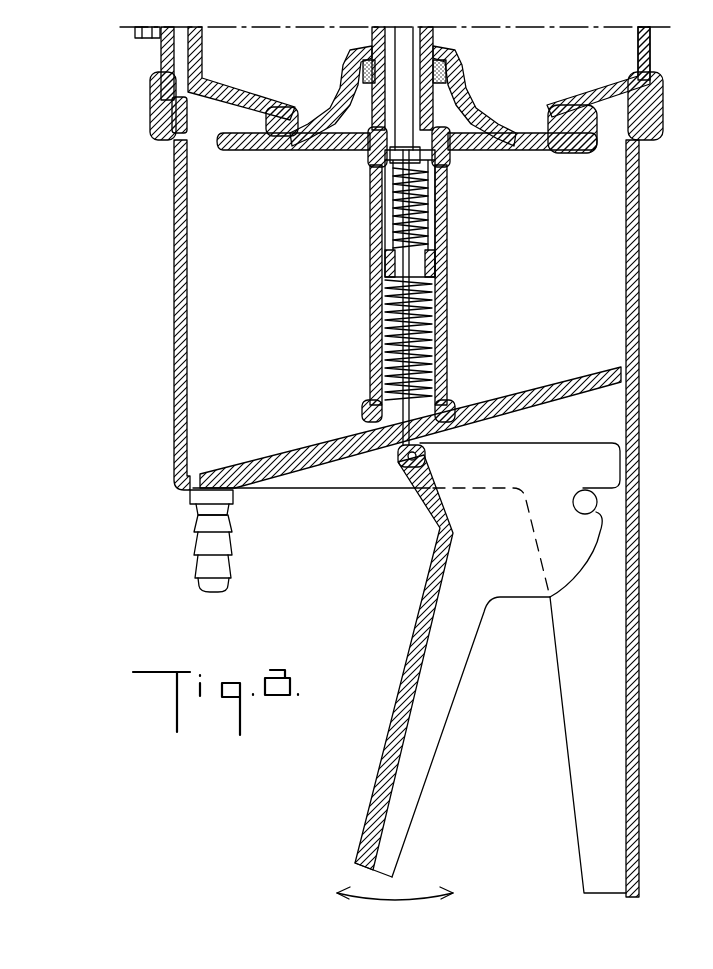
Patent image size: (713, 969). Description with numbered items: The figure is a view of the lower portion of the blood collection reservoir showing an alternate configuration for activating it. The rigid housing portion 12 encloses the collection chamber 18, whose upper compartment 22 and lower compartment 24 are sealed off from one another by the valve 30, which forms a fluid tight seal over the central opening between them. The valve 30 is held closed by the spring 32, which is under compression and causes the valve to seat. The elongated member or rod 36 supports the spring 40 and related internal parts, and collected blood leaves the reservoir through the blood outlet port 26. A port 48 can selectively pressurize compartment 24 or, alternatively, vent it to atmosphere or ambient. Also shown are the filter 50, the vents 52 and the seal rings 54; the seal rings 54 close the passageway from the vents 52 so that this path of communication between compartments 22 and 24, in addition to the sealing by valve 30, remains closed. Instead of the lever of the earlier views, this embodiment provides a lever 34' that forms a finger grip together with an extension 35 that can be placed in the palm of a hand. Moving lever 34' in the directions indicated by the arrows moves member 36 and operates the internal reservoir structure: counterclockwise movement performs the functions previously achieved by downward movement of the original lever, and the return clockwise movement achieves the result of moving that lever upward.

The rigid housing portion 12 is at (660, 103).
The collection chamber 18 is at (622, 50).
The compartment 22 is at (517, 73).
The compartment 24 is at (522, 300).
The blood outlet port 26 is at (195, 570).
The valve 30 is at (263, 158).
The spring 32 is at (382, 347).
The lever 34' is at (364, 677).
The extension 35 is at (580, 846).
The elongated member or rod 36 is at (398, 445).
The spring 40 is at (381, 233).
The port 48 is at (137, 42).
The filter 50 is at (380, 98).
The vents 52 is at (360, 57).
The seal rings 54 is at (441, 147).